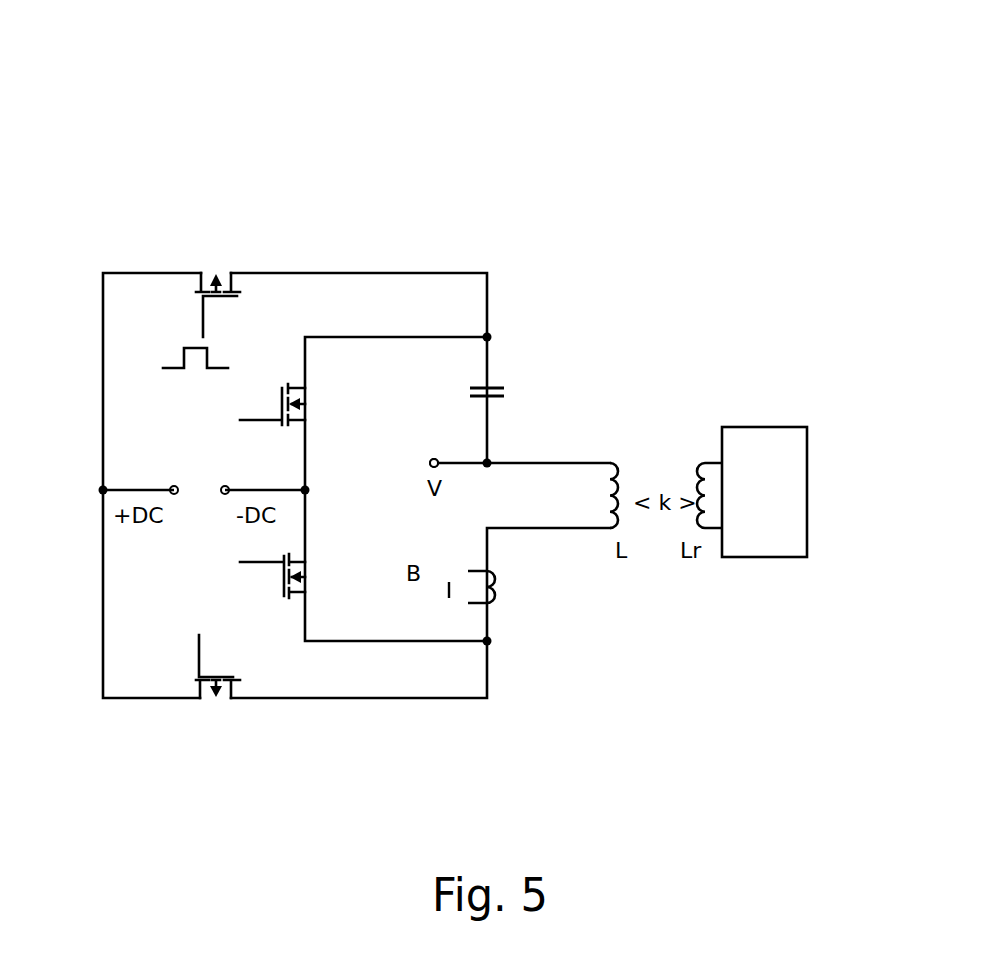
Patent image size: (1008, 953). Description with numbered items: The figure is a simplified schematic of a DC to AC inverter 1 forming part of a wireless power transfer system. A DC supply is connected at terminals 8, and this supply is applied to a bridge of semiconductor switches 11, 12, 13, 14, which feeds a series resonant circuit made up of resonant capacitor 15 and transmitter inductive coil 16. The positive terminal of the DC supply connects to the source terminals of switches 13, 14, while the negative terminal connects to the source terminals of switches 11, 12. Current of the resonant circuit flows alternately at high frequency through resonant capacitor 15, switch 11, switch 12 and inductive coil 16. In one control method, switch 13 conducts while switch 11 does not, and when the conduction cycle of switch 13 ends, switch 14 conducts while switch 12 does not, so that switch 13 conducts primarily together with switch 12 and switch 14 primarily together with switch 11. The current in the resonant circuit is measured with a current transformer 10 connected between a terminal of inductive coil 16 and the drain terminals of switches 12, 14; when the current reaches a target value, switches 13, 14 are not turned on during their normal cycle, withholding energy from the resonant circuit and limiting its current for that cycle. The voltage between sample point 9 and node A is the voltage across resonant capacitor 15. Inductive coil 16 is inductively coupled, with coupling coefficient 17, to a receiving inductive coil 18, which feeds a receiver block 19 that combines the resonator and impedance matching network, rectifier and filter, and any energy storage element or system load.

The inverter 1 is at (372, 72).
The terminals 8 is at (224, 481).
The sample point 9 is at (433, 447).
The current transformer 10 is at (500, 590).
The switch 11 is at (283, 375).
The switch 12 is at (275, 577).
The switch 13 is at (190, 288).
The switch 14 is at (243, 685).
The resonant capacitor 15 is at (503, 375).
The inductive coil 16 is at (614, 457).
The coupling coefficient 17 is at (660, 512).
The receiving inductive coil 18 is at (707, 457).
The receiver block 19 is at (778, 494).
The node A is at (493, 322).